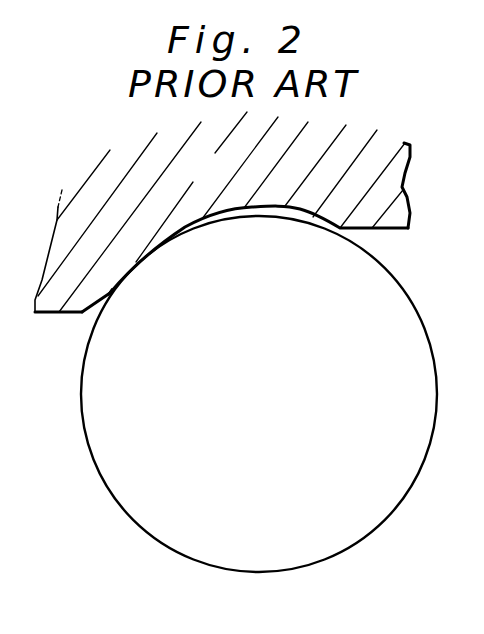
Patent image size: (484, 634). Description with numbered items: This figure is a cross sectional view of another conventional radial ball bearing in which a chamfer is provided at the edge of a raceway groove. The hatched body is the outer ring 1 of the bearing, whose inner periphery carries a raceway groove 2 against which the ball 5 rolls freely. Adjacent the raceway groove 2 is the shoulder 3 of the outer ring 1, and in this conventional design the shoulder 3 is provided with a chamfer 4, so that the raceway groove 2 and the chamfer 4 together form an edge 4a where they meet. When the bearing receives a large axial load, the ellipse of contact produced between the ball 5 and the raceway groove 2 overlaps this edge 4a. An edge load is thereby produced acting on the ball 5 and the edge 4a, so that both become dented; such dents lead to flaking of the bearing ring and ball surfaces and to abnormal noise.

The outer ring 1 is at (223, 181).
The raceway groove 2 is at (267, 211).
The shoulder 3 is at (53, 315).
The chamfer 4 is at (97, 305).
The edge 4a is at (113, 289).
The ball 5 is at (342, 553).